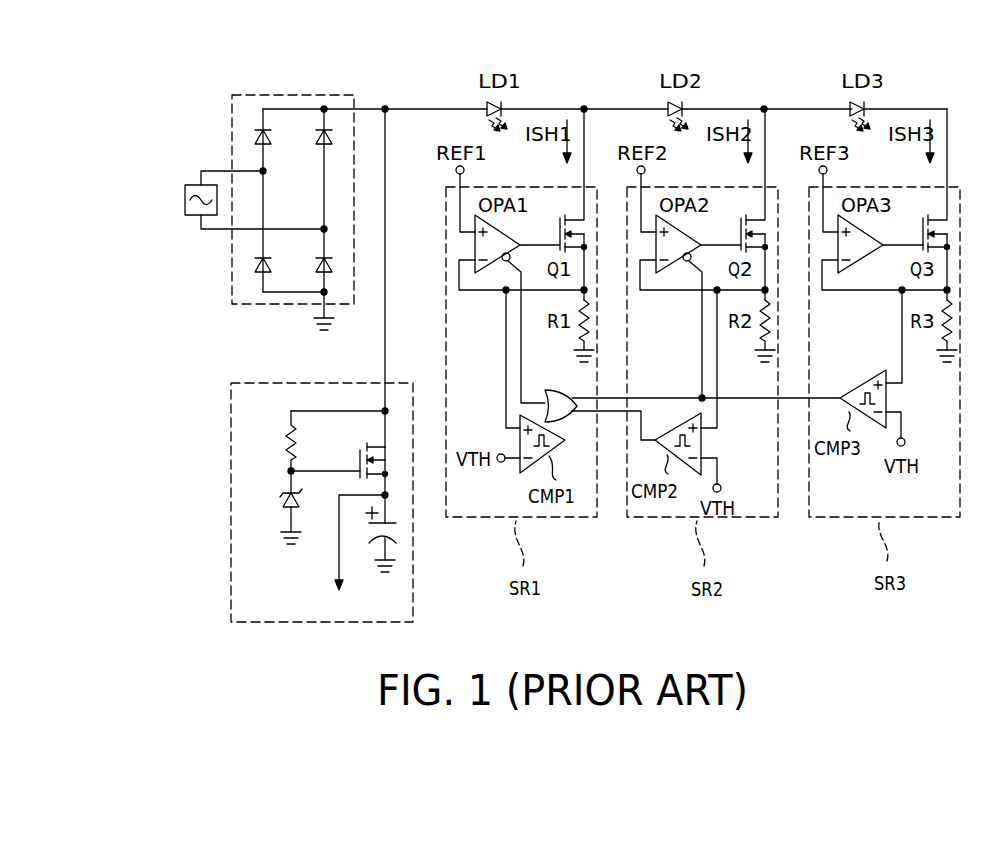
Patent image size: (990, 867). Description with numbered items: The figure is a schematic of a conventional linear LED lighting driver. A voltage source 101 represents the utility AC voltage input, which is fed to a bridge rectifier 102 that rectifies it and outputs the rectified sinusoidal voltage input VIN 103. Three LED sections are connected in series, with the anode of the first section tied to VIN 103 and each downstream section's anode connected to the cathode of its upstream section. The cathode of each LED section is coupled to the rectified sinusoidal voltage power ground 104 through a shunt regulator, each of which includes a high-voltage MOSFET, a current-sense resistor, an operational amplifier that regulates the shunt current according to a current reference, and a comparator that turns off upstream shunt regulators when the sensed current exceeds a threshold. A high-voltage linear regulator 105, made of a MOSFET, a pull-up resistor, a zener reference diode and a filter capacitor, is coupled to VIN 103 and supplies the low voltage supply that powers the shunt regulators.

The voltage source 101 is at (185, 199).
The bridge rectifier 102 is at (293, 95).
The rectified sinusoidal voltage input VIN 103 is at (428, 108).
The rectified sinusoidal voltage power ground 104 is at (323, 312).
The high-voltage linear regulator 105 is at (231, 508).